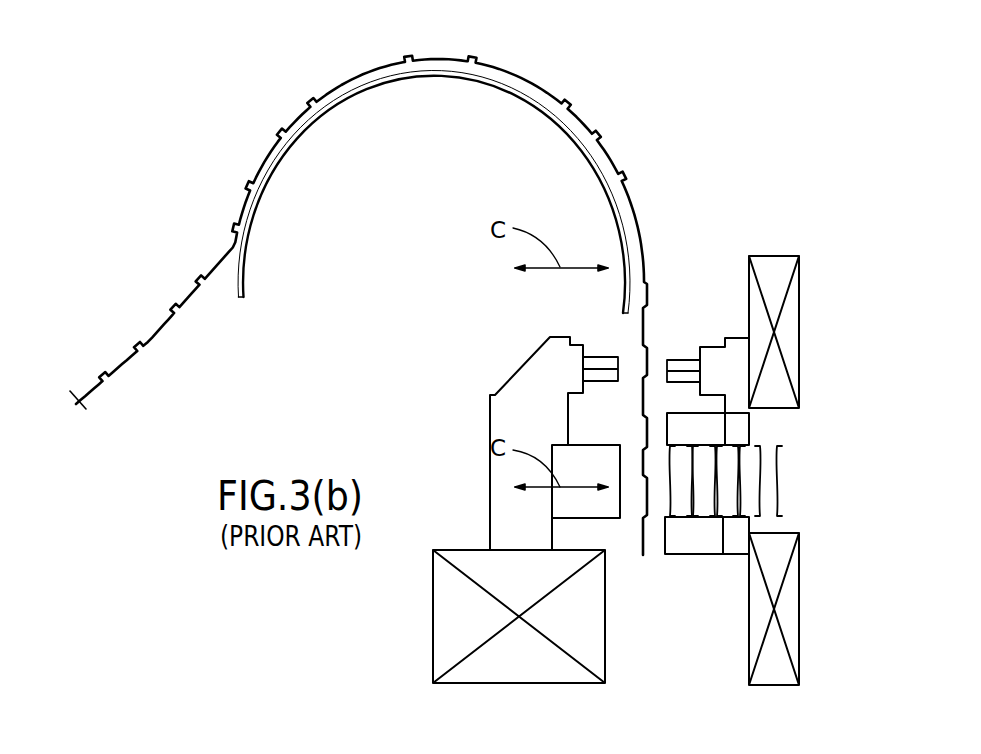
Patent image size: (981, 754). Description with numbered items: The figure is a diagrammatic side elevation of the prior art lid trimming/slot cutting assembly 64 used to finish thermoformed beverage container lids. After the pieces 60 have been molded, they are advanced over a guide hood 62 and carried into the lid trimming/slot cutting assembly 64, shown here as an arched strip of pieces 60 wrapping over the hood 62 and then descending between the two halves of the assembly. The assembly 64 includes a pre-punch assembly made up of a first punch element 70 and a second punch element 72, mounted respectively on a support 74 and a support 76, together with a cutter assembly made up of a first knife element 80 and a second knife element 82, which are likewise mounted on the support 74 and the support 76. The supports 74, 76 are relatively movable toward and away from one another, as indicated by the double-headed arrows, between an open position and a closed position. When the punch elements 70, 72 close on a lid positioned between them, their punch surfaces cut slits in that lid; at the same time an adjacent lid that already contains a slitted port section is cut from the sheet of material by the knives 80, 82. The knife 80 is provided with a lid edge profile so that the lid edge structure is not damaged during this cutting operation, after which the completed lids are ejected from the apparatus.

The pieces 60 is at (177, 330).
The guide hood 62 is at (482, 78).
The lid trimming/slot cutting assembly 64 is at (710, 152).
The first punch element 70 is at (597, 360).
The second punch element 72 is at (677, 365).
The support 74 is at (540, 372).
The support 76 is at (735, 363).
The first knife element 80 is at (562, 498).
The second knife element 82 is at (708, 432).